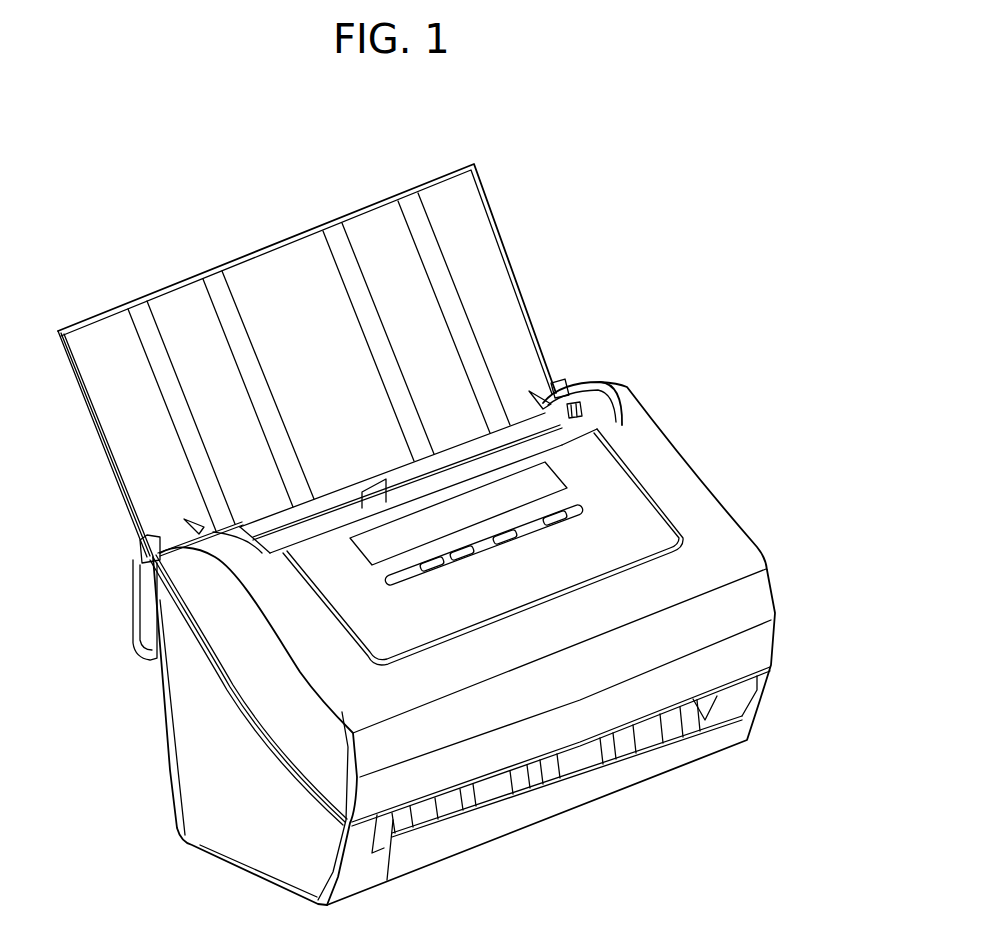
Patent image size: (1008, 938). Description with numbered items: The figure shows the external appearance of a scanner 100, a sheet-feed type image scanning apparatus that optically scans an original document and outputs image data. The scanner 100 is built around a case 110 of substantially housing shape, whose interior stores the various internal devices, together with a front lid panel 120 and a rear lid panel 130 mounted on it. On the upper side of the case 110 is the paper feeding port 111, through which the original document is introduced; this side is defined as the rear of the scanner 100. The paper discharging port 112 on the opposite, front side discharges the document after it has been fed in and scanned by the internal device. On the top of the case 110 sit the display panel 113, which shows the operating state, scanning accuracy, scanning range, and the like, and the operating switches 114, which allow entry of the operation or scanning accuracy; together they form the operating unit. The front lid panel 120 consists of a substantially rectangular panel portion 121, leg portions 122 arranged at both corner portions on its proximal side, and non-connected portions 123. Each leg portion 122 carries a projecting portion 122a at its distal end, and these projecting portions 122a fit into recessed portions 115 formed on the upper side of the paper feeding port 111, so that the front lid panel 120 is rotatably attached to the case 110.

The scanner 100 is at (558, 105).
The case 110 is at (730, 473).
The paper feeding port 111 is at (413, 485).
The paper discharging port 112 is at (573, 760).
The display panel 113 is at (547, 483).
The operating switches 114 is at (560, 521).
The recessed portions 115 is at (582, 403).
The front lid panel 120 is at (521, 242).
The panel portion 121 is at (285, 270).
The leg portions 122 is at (530, 391).
The projecting portion 122a is at (612, 383).
The non-connected portions 123 is at (562, 380).
The rear lid panel 130 is at (140, 597).